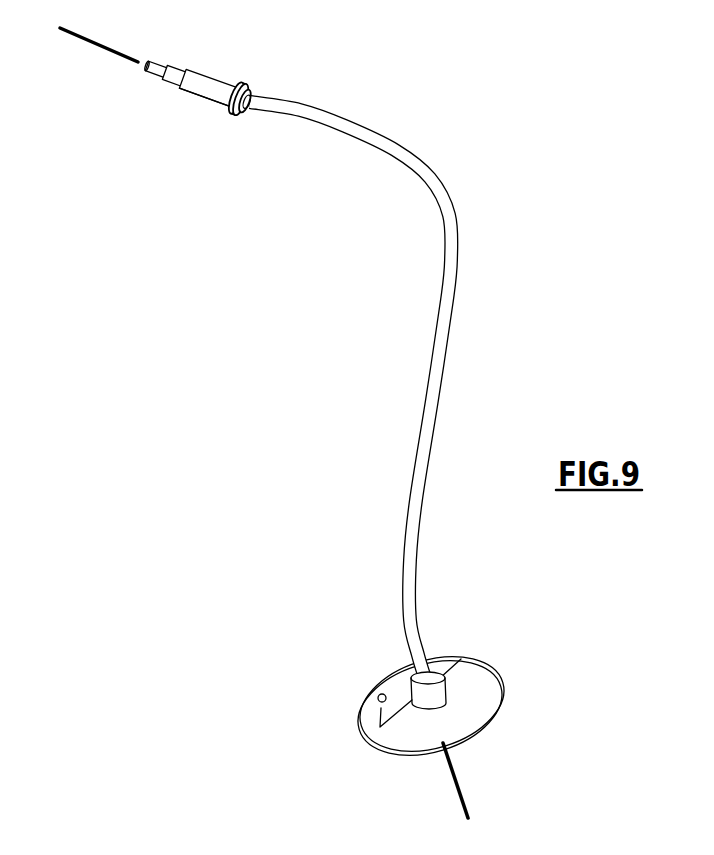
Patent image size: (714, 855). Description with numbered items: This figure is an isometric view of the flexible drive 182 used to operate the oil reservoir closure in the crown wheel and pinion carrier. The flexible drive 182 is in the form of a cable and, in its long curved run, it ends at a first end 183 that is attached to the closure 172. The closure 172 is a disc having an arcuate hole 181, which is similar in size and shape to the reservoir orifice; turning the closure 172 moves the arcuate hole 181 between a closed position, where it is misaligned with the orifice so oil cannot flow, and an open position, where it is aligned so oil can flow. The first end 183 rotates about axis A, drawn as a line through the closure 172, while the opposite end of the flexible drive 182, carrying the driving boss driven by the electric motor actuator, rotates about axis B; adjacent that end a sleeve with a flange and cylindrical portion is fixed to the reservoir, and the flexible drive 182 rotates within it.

The closure 172 is at (477, 713).
The arcuate hole 181 is at (378, 699).
The flexible drive 182 is at (458, 288).
The first end 183 is at (412, 664).
The axis A is at (454, 782).
The axis B is at (82, 44).